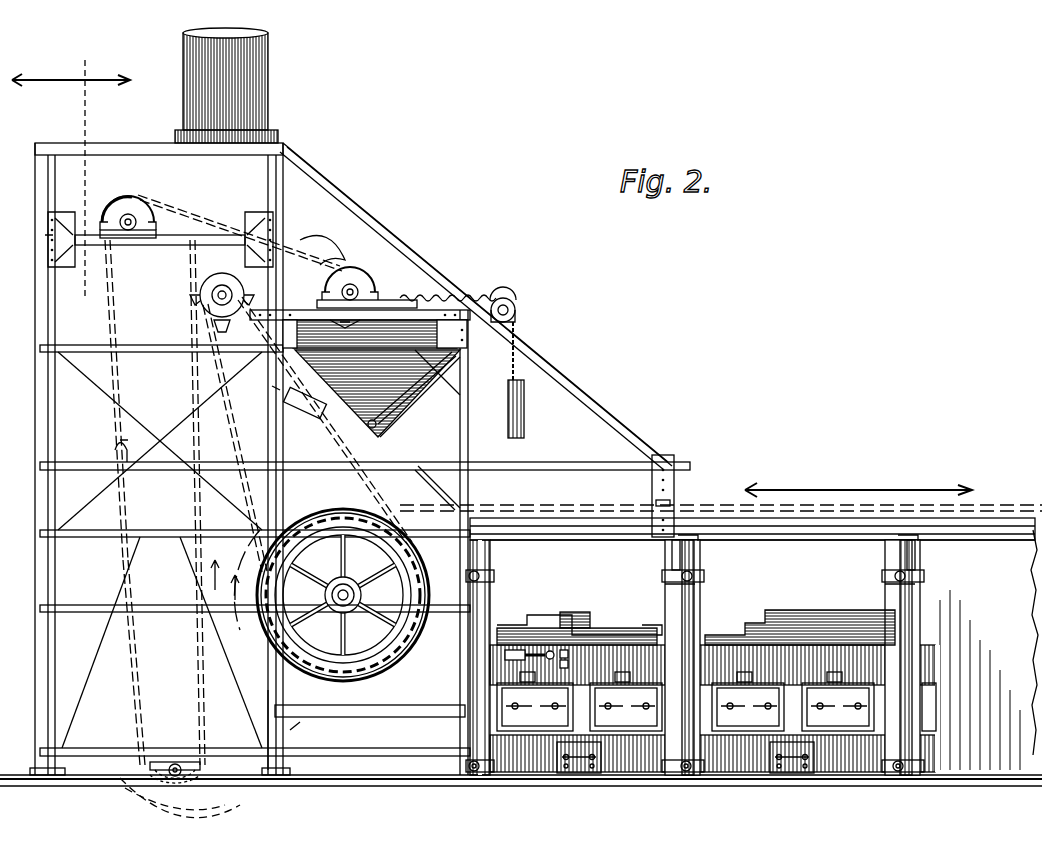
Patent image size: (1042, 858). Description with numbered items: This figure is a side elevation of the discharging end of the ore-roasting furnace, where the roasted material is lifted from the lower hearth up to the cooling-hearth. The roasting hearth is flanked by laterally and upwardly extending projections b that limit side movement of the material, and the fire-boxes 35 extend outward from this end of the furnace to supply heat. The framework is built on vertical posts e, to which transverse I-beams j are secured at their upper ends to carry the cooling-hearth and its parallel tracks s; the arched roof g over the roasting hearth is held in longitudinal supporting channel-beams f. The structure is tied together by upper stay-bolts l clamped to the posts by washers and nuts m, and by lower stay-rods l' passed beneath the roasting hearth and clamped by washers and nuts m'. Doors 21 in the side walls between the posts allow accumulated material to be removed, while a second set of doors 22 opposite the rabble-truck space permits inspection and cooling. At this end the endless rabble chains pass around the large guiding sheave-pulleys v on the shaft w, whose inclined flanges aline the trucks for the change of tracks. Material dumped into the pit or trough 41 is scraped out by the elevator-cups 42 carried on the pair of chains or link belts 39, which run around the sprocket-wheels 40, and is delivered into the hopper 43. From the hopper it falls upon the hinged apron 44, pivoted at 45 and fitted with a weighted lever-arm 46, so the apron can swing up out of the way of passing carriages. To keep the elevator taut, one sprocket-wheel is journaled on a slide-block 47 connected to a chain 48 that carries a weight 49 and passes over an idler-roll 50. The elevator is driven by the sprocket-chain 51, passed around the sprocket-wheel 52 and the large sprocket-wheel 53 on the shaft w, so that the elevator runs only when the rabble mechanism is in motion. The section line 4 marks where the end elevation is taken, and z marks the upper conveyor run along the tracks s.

The section line 4 is at (71, 170).
The sprocket-wheels 40 is at (130, 210).
The chains or link belts 39 is at (218, 222).
The elevator-cups 42 is at (330, 252).
The sprocket-wheel 52 is at (200, 288).
The sprocket-chain 51 is at (225, 440).
The hopper 43 is at (360, 373).
The pivot 45 is at (400, 424).
The weighted lever-arm 46 is at (310, 415).
The slide-block 47 is at (405, 292).
The chain 48 is at (498, 298).
The idler-roll 50 is at (516, 308).
The weight 49 is at (524, 425).
The hinged apron 44 is at (432, 478).
The large guiding sheave-pulleys v is at (312, 514).
The large sprocket-wheel 53 is at (322, 595).
The shaft w is at (356, 594).
The projections b is at (262, 718).
The pit or trough 41 is at (240, 808).
The tracks s is at (780, 522).
The conveyor chain z is at (988, 503).
The vertical posts e is at (480, 625).
The I-beams j is at (680, 552).
The washers and nuts m is at (695, 567).
The stay-bolts l is at (790, 584).
The washers and nuts m' is at (674, 782).
The stay-rods l' is at (694, 790).
The doors 22 is at (716, 701).
The doors 21 is at (685, 757).
The longitudinal supporting channel-beams f is at (592, 665).
The arched roof g is at (814, 625).
The fire-boxes 35 is at (989, 575).